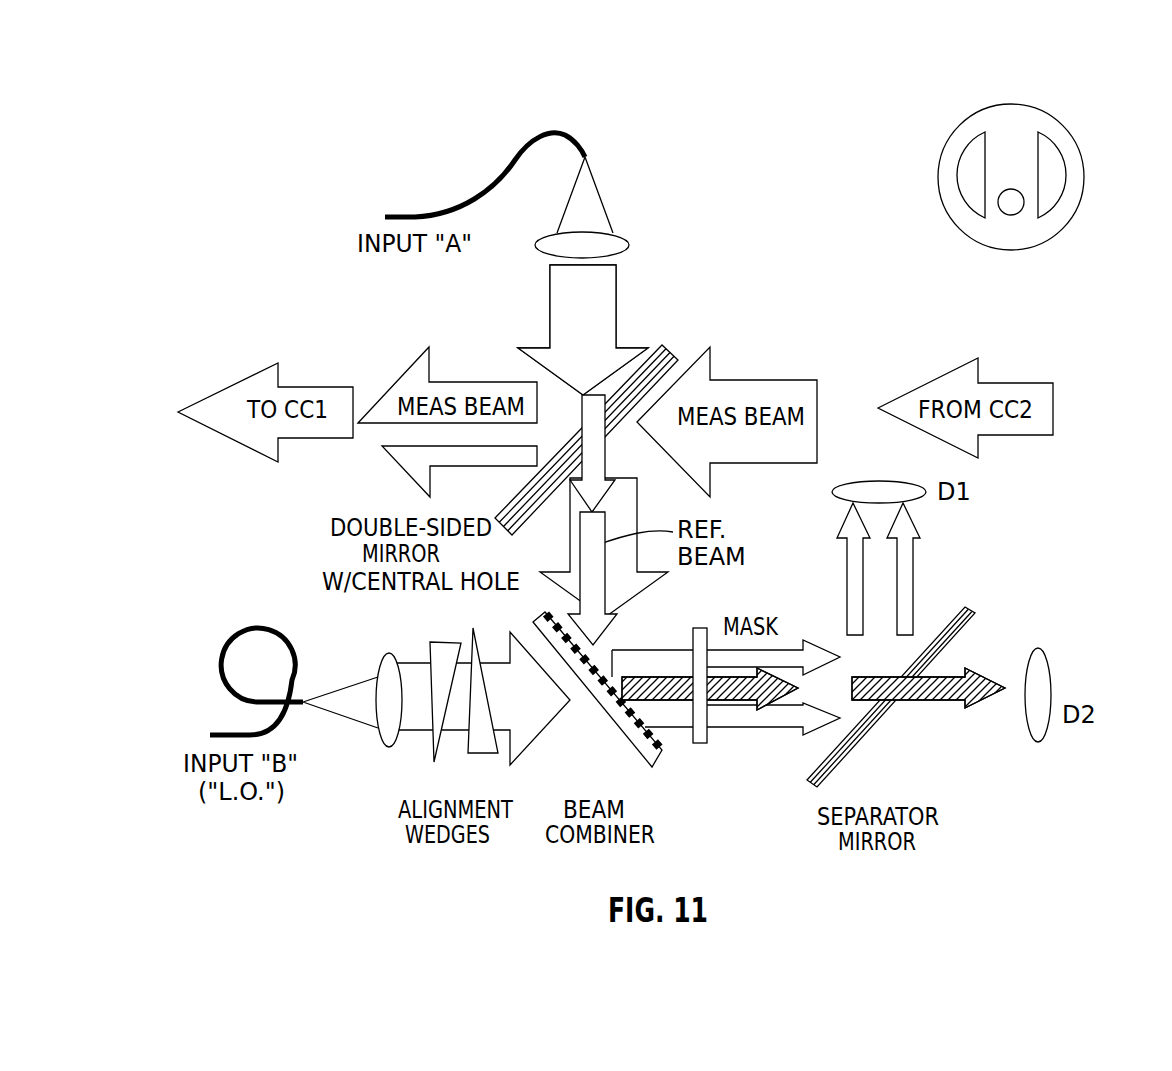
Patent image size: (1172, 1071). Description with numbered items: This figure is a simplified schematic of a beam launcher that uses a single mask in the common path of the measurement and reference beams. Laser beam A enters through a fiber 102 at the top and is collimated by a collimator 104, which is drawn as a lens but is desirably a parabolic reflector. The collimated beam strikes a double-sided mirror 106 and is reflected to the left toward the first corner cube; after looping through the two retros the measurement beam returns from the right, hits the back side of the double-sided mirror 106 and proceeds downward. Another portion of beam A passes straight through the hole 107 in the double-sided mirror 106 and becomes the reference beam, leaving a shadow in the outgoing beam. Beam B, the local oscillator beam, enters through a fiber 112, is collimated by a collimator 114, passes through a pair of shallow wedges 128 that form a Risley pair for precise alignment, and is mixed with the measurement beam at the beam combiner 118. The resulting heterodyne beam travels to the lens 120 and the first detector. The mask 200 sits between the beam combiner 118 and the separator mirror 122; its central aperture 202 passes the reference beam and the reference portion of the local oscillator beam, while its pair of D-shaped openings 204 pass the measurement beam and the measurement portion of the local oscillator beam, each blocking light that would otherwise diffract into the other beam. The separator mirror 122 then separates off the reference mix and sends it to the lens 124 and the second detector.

The fiber 102 is at (505, 165).
The collimator 104 is at (627, 240).
The double-sided mirror 106 is at (653, 346).
The hole 107 is at (610, 443).
The fiber 112 is at (238, 630).
The collimator 114 is at (385, 748).
The beam combiner 118 is at (620, 735).
The lens 120 is at (880, 478).
The separator mirror 122 is at (842, 758).
The lens 124 is at (1037, 648).
The shallow wedges 128 is at (468, 748).
The mask 200 is at (707, 742).
The aperture 202 is at (1007, 207).
The D-shaped openings 204 is at (972, 162).